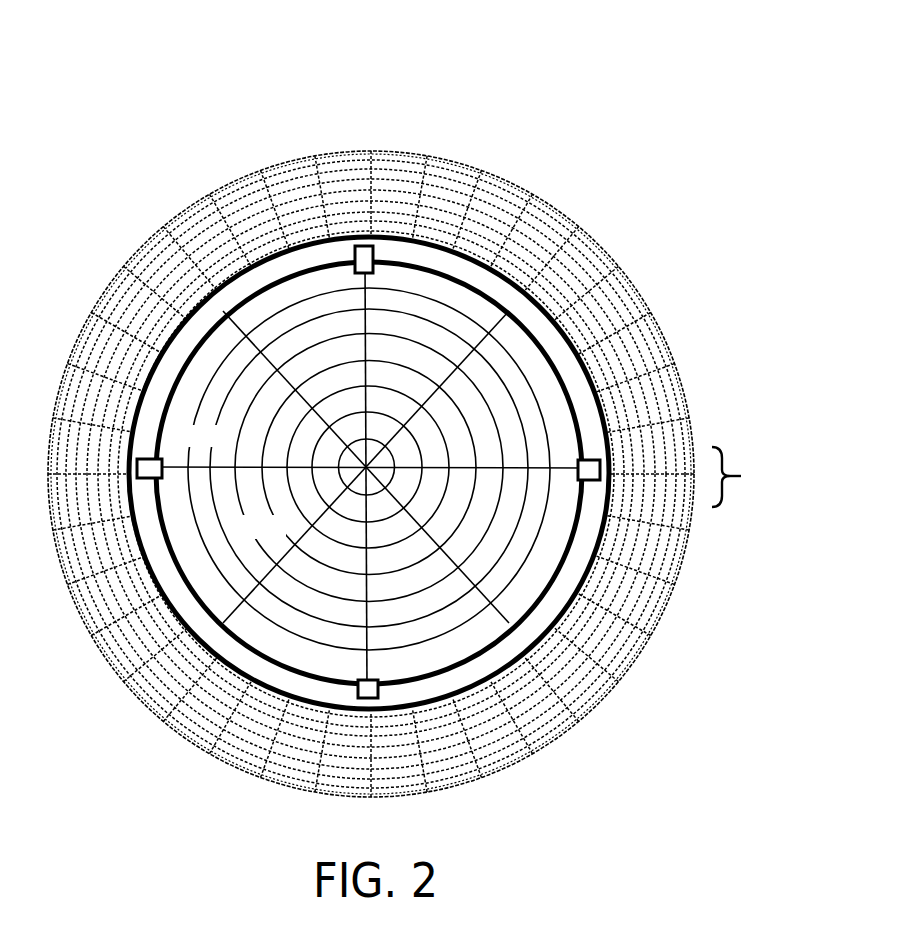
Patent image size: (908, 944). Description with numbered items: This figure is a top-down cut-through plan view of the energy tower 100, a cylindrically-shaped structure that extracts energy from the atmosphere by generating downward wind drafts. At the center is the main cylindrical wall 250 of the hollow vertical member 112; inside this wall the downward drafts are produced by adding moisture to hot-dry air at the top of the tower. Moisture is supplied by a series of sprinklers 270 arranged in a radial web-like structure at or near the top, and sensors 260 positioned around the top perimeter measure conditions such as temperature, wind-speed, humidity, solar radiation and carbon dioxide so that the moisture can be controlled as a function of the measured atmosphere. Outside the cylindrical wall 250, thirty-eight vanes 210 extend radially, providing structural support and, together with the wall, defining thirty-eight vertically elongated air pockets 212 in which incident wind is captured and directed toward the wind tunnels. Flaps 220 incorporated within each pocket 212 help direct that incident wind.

The energy tower 100 is at (708, 156).
The hollow/vertical member 112 is at (555, 210).
The vanes 210 is at (672, 395).
The air pockets 212 is at (750, 477).
The flaps 220 is at (677, 522).
The cylindrical wall 250 is at (565, 328).
The sensors 260 is at (157, 453).
The sprinklers 270 is at (210, 555).